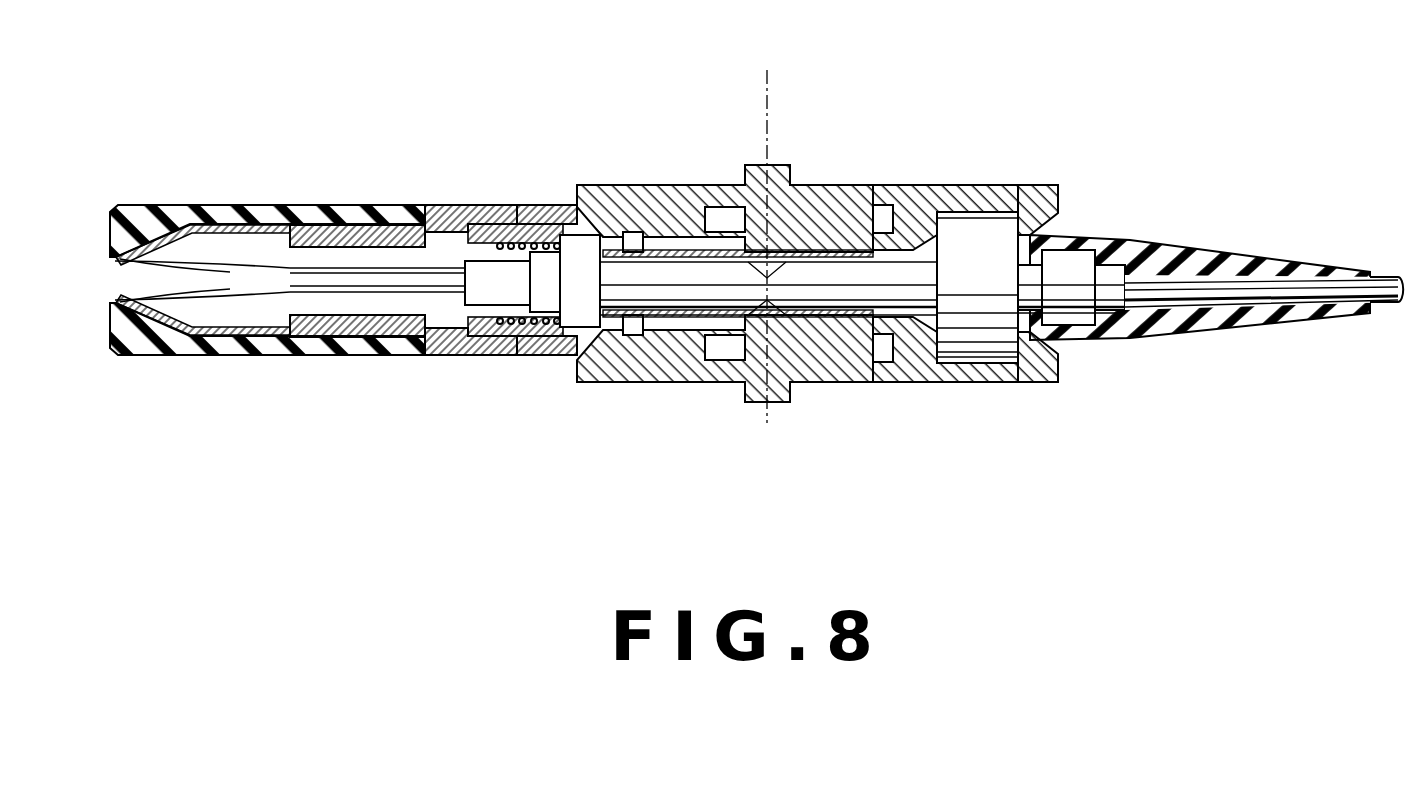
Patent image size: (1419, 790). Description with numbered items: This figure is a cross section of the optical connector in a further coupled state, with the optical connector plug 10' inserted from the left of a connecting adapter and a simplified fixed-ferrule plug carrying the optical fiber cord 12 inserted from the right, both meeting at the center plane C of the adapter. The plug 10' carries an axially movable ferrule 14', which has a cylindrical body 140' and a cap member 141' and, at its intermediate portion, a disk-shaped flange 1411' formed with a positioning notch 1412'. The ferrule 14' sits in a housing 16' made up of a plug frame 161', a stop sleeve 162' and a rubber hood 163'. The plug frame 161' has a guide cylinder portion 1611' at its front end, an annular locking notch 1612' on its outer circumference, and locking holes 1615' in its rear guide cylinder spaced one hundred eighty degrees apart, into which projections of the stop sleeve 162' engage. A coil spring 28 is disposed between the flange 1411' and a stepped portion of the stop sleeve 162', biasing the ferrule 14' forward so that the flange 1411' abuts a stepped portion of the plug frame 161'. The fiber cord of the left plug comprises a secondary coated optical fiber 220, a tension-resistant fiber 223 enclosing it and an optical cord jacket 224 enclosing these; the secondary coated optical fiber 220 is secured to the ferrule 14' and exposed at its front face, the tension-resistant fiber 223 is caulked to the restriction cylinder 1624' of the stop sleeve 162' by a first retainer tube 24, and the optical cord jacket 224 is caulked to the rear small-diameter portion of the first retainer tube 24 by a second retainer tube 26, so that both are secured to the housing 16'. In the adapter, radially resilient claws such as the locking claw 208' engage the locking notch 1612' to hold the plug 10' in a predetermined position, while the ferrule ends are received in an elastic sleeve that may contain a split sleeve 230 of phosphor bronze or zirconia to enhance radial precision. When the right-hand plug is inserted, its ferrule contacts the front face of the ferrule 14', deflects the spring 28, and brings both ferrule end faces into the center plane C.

The optical connector plug 10' is at (495, 208).
The center plane C is at (770, 105).
The optical fiber cord 12 is at (1213, 288).
The ferrule 14' is at (665, 370).
The housing 16' is at (345, 388).
The first retainer tube 24 is at (345, 225).
The second retainer tube 26 is at (235, 260).
The coil spring 28 is at (503, 225).
The cylindrical body 140' is at (725, 347).
The cap member 141' is at (611, 382).
The plug frame 161' is at (536, 369).
The stop sleeve 162' is at (460, 369).
The rubber hood 163' is at (267, 369).
The locking claw 208' is at (915, 211).
The secondary coated optical fiber 220 is at (375, 293).
The tension-resistant fiber 223 is at (172, 333).
The optical cord jacket 224 is at (157, 236).
The split sleeve 230 is at (776, 330).
The disk-shaped flange 1411' is at (529, 172).
The positioning notch 1412' is at (519, 204).
The guide cylinder portion 1611' is at (720, 222).
The annular locking notch 1612' is at (645, 224).
The locking holes 1615' is at (429, 231).
The restriction cylinder 1624' is at (348, 369).